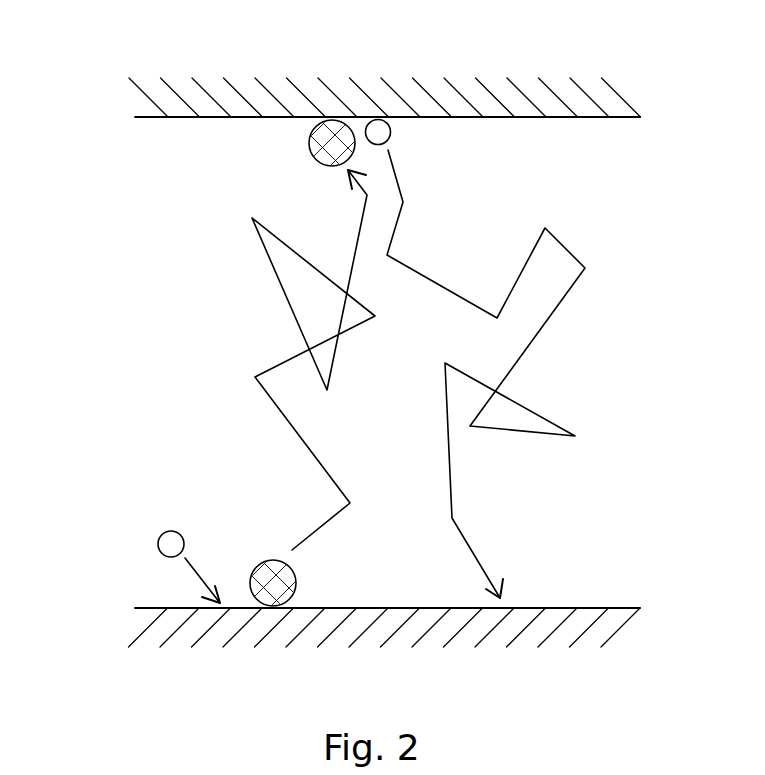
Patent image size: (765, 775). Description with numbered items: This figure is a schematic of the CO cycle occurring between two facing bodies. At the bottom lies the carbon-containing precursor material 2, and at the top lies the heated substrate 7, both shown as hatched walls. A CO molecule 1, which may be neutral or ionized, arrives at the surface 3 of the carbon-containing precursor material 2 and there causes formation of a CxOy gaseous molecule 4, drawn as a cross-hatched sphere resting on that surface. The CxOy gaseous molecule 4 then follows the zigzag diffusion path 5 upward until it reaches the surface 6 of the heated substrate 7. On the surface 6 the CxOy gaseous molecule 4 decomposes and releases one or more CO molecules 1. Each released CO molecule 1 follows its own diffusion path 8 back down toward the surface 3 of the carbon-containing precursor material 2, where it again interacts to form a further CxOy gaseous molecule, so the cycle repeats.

The CO molecule 1 is at (400, 137).
The carbon-containing precursor material 2 is at (130, 633).
The surface of the carbon-containing precursor material 3 is at (355, 608).
The CxOy gaseous molecule 4 is at (262, 543).
The diffusion path 5 is at (253, 363).
The surface of the heated substrate 6 is at (235, 117).
The heated substrate 7 is at (141, 95).
The diffusion path 8 is at (573, 243).